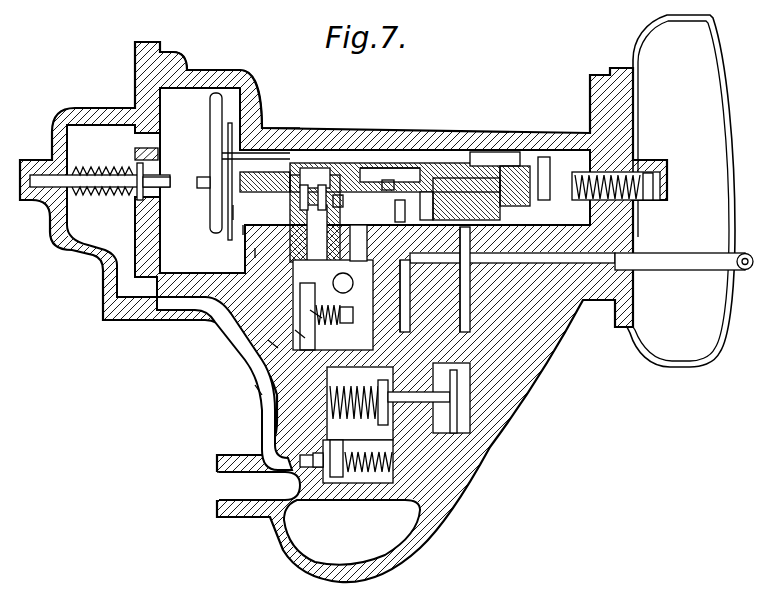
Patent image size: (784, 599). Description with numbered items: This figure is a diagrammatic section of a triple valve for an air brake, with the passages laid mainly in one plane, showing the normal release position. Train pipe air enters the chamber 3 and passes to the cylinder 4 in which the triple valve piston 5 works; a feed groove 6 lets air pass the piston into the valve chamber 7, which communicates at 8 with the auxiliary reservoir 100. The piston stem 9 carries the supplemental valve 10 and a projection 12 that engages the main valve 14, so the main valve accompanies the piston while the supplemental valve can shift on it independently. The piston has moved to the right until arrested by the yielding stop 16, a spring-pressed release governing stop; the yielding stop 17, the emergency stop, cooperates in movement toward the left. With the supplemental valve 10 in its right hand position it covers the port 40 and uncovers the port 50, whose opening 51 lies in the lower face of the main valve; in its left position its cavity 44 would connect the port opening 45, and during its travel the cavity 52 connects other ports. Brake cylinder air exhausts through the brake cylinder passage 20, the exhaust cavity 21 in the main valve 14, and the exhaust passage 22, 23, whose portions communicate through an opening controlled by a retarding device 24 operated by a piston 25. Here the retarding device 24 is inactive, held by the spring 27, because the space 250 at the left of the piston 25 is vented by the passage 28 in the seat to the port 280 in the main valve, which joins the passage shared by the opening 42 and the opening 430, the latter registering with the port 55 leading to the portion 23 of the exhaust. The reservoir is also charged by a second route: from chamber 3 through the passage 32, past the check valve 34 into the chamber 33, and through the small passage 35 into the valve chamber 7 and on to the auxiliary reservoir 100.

The chamber 3 is at (251, 484).
The cylinder 4 is at (178, 96).
The triple valve piston 5 is at (218, 120).
The feed groove 6 is at (237, 84).
The valve chamber 7 is at (263, 152).
The communication opening 8 is at (627, 160).
The piston stem 9 is at (258, 165).
The supplemental valve 10 is at (382, 175).
The projection 12 is at (290, 193).
The main valve 14 is at (398, 220).
The yielding stop 16 is at (550, 183).
The yielding stop 17 is at (133, 172).
The brake cylinder passage 20 is at (552, 262).
The exhaust cavity 21 is at (422, 207).
The exhaust passage 22 is at (395, 268).
The exhaust passage 23 is at (400, 300).
The retarding device 24 is at (405, 330).
The piston 25 is at (273, 343).
The spring 27 is at (258, 390).
The passage 28 is at (243, 230).
The passage 32 is at (307, 458).
The chamber 33 is at (398, 401).
The check valve 34 is at (337, 480).
The passage 35 is at (317, 313).
The port 40 is at (453, 193).
The opening 42 is at (233, 212).
The cavity 44 is at (487, 160).
The port opening 45 is at (520, 165).
The port 50 is at (330, 193).
The opening 51 is at (322, 200).
The cavity 52 is at (387, 187).
The port 55 is at (262, 252).
The auxiliary reservoir 100 is at (681, 191).
The space 250 is at (300, 333).
The port 280 is at (337, 203).
The opening 430 is at (310, 200).